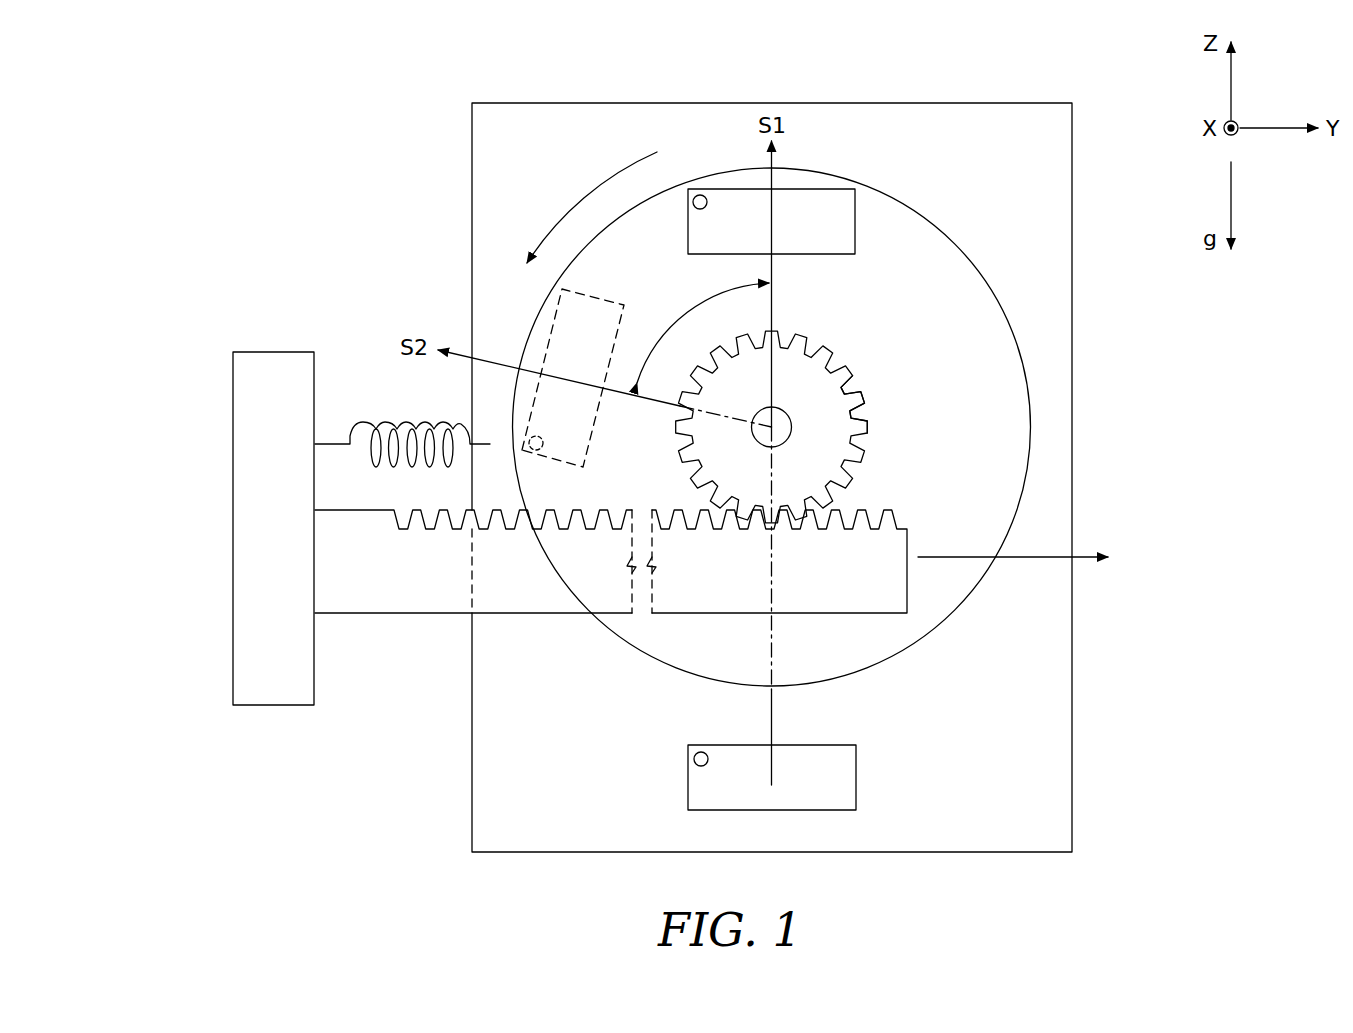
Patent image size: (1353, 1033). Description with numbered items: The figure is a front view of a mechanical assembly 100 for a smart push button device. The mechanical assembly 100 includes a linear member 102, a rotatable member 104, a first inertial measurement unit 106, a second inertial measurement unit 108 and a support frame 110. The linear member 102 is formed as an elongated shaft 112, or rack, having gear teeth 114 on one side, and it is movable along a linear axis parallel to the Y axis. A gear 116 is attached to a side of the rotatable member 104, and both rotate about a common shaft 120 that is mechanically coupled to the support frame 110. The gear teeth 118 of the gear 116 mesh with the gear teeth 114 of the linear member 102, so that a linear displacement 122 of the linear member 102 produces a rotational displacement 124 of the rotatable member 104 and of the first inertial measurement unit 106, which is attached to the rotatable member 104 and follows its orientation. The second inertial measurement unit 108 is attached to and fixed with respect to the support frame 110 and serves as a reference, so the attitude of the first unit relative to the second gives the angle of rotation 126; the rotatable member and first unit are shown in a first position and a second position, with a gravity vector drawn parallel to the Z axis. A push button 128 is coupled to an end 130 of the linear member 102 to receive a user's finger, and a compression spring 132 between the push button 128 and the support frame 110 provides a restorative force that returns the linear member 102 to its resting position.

The mechanical assembly 100 is at (338, 127).
The linear member 102 is at (422, 639).
The rotatable member 104 is at (884, 207).
The first inertial measurement unit 106 is at (828, 197).
The second inertial measurement unit 108 is at (822, 781).
The support frame 110 is at (1045, 635).
The elongated shaft 112 is at (626, 564).
The gear teeth 114 is at (866, 512).
The gear 116 is at (800, 363).
The gear teeth 118 is at (858, 402).
The common shaft 120 is at (780, 425).
The linear displacement 122 is at (1080, 553).
The rotational displacement 124 is at (583, 200).
The angle of rotation ϕ 126 is at (665, 328).
The push button 128 is at (270, 370).
The end 130 is at (343, 629).
The compression spring 132 is at (363, 422).